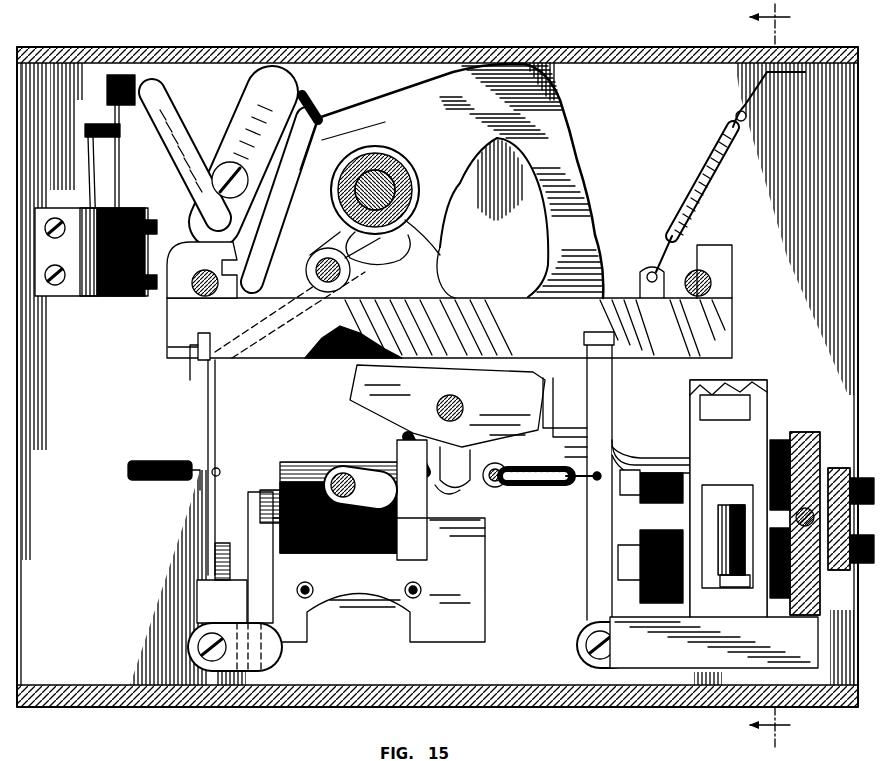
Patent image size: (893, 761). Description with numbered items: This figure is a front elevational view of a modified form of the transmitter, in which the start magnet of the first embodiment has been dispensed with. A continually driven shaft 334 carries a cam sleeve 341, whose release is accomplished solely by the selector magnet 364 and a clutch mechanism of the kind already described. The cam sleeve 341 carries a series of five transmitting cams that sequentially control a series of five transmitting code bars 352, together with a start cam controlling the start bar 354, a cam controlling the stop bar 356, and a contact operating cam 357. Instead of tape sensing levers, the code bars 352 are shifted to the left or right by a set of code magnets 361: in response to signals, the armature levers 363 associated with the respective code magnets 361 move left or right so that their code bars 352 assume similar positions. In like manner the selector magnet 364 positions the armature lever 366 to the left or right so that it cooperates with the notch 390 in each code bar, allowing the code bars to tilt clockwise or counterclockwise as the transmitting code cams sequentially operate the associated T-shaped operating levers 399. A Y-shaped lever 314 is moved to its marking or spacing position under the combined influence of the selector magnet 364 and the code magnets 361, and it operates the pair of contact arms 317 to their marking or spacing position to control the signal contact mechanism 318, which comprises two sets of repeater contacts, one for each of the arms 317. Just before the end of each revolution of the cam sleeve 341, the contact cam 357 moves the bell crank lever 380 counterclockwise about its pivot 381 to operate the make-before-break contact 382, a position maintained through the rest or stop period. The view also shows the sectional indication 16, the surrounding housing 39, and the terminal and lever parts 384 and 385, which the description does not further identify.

The section line 16 is at (784, 376).
The housing 39 is at (194, 760).
The Y-shaped lever 314 is at (477, 397).
The contact arms 317 is at (625, 447).
The signal contact mechanism 318 is at (776, 412).
The continually driven shaft 334 is at (397, 162).
The cam sleeve 341 is at (375, 158).
The transmitting code bars 352 is at (333, 364).
The start bar 354 is at (732, 248).
The stop bar 356 is at (722, 332).
The contact operating cam 357 is at (333, 165).
The code magnets 361 is at (658, 603).
The armature levers 363 is at (607, 407).
The selector magnet 364 is at (343, 553).
The armature lever 366 is at (205, 507).
The bell crank lever 380 is at (250, 240).
The pivot 381 is at (255, 290).
The make-before-break contact 382 is at (106, 112).
The lever 384 is at (118, 128).
The terminal block 385 is at (100, 150).
The notch 390 is at (187, 303).
The T-shaped operating levers 399 is at (433, 245).